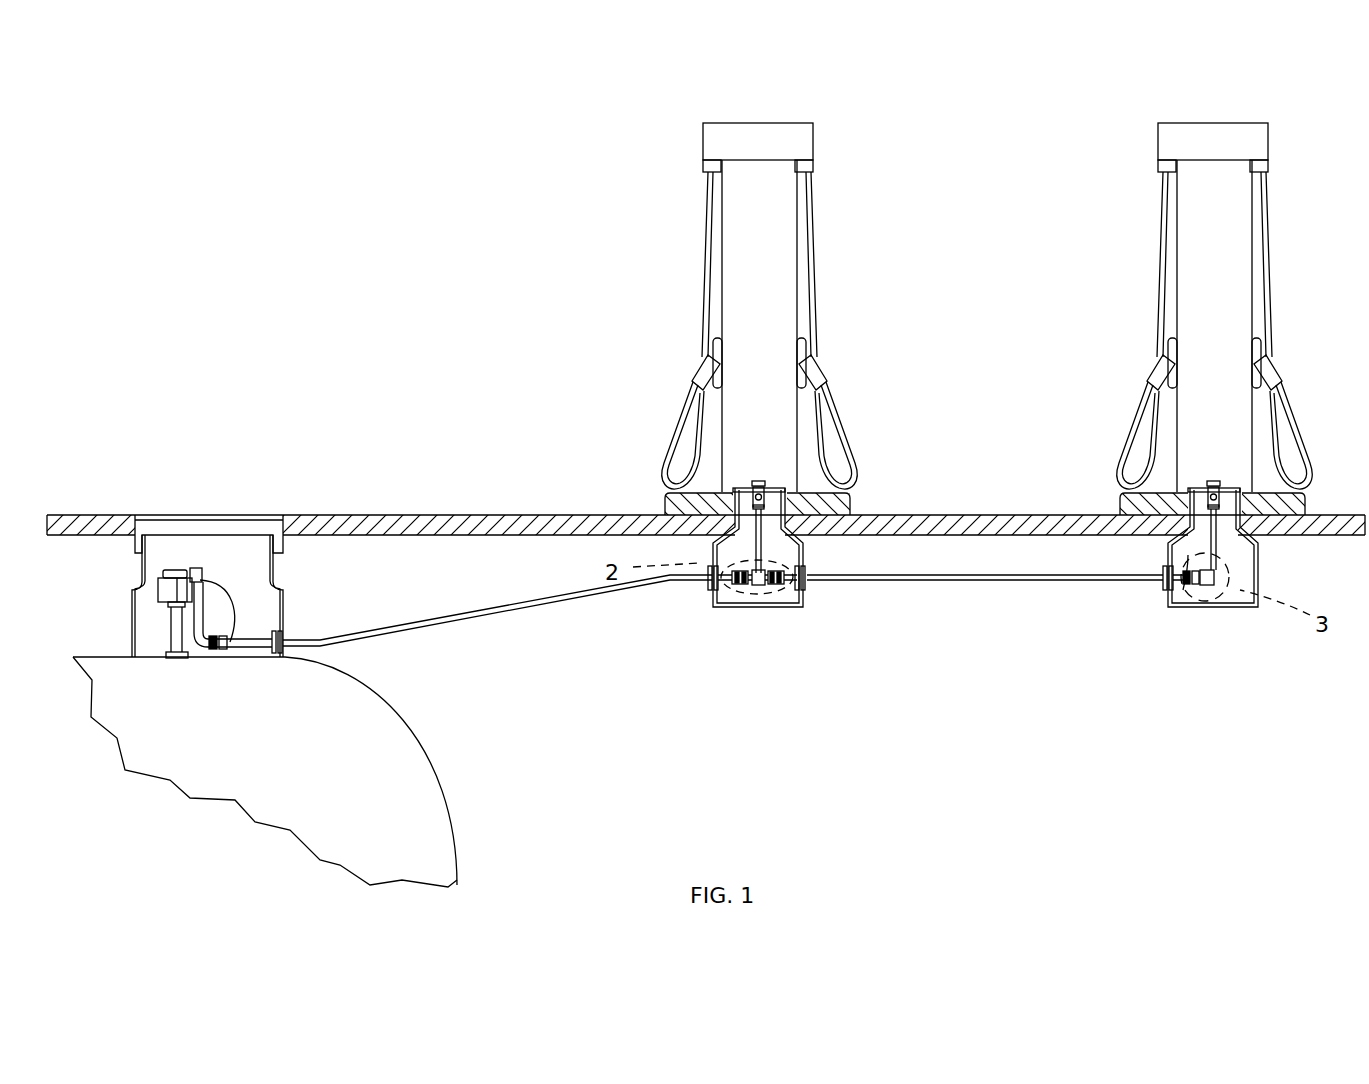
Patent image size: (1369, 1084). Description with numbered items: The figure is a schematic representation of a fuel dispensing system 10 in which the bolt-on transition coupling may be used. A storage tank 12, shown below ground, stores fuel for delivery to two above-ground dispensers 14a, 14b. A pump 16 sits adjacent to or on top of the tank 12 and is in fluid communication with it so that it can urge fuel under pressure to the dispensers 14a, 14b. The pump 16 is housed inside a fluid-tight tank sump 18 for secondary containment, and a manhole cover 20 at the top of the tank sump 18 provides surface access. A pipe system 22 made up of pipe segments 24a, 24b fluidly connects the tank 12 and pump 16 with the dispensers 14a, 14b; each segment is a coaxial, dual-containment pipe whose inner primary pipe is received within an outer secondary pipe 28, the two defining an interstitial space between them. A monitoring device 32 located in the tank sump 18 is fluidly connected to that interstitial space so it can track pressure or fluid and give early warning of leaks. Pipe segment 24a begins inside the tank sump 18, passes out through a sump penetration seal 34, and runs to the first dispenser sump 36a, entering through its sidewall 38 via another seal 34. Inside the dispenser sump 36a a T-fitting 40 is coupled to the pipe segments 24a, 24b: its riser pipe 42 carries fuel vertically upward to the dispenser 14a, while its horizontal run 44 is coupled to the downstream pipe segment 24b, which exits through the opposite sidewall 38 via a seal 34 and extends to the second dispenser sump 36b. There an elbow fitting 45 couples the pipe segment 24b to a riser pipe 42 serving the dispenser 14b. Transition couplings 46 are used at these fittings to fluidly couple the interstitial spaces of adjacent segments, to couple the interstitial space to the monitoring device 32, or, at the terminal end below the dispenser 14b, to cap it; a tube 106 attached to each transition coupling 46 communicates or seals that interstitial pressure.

The fuel dispensing system 10 is at (508, 320).
The storage tank 12 is at (405, 711).
The dispenser 14a is at (797, 307).
The dispenser 14b is at (1252, 307).
The pump 16 is at (163, 590).
The tank sump 18 is at (278, 588).
The manhole cover 20 is at (150, 518).
The pipe system 22 is at (615, 663).
The pipe segment 24a is at (432, 622).
The pipe segment 24b is at (808, 588).
The secondary pipe 28 is at (476, 622).
The monitoring device 32 is at (192, 567).
The sump penetration seal 34 is at (283, 633).
The dispenser sump 36a is at (712, 602).
The dispenser sump 36b is at (1258, 547).
The sidewall 38 is at (710, 555).
The T-fitting 40 is at (757, 550).
The riser pipe 42 is at (763, 550).
The horizontal run 44 is at (762, 590).
The elbow fitting 45 is at (1217, 585).
The transition coupling 46 is at (232, 647).
The tube 106 is at (202, 582).